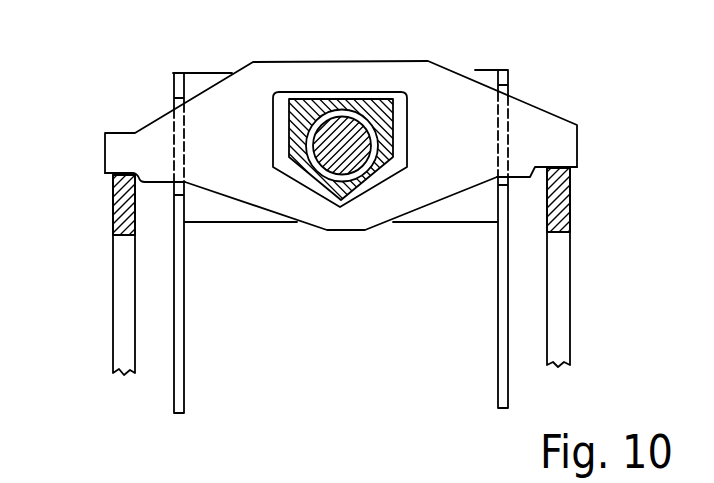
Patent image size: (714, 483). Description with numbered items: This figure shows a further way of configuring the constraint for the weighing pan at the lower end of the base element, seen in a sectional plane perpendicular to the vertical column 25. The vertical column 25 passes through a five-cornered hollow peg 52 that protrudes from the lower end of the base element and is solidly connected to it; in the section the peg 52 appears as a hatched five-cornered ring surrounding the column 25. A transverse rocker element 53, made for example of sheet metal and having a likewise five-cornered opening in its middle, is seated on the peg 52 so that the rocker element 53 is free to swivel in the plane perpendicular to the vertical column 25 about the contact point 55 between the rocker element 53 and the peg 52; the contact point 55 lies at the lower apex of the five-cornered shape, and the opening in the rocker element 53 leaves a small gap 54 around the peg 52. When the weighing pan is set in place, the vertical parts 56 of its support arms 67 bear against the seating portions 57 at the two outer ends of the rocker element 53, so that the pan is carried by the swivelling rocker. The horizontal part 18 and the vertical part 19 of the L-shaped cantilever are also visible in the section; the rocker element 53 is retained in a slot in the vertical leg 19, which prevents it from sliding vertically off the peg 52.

The horizontal part of the L-shaped cantilever 18 is at (187, 380).
The vertical part of the L-shaped cantilever 19 is at (215, 212).
The vertical column 25 is at (367, 120).
The five-cornered hollow peg 52 is at (310, 110).
The rocker element 53 is at (458, 100).
The groove 54 is at (278, 100).
The contact point 55 is at (341, 207).
The vertical parts of the support arms 56 is at (118, 205).
The seating portions 57 is at (122, 171).
The support arms 67 is at (104, 270).